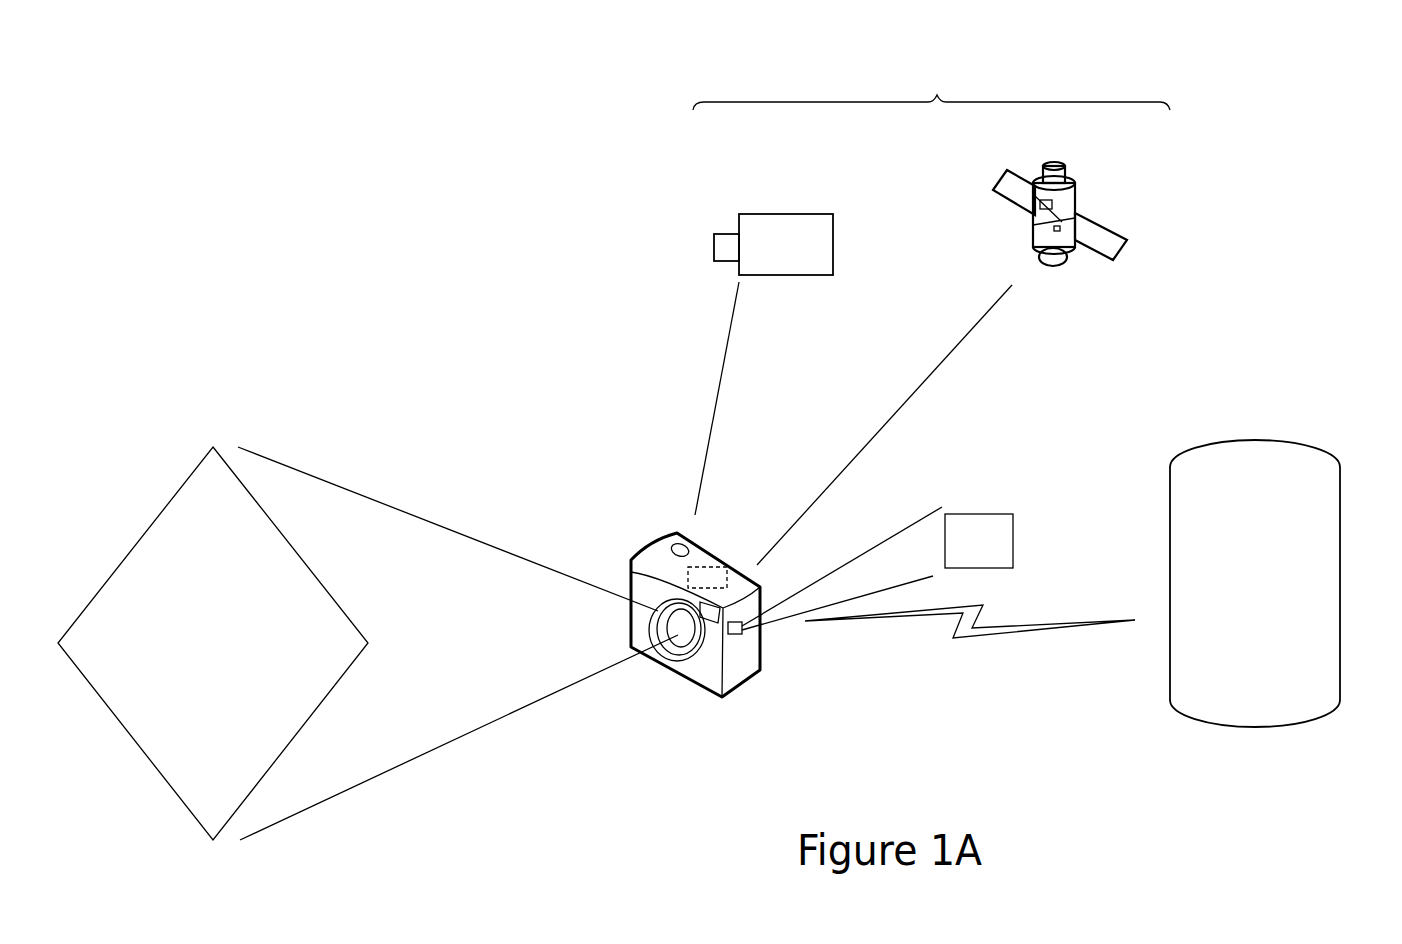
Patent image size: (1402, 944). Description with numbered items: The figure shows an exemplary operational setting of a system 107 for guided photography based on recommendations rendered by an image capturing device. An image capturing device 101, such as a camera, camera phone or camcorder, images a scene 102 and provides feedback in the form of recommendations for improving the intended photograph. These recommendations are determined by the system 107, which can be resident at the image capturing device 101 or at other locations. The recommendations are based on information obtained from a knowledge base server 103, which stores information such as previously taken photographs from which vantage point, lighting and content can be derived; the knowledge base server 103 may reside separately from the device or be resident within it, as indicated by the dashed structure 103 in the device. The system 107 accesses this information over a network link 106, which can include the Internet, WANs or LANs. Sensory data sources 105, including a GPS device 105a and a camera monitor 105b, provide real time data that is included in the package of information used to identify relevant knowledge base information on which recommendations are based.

The image capturing device 101 is at (738, 670).
The imaged scene 102 is at (290, 747).
The knowledge base server 103 is at (1273, 491).
The sensory data sources 105 is at (931, 70).
The global positioning satellite (GPS) device 105a is at (1108, 222).
The camera monitor 105b is at (780, 212).
The network link 106 is at (966, 640).
The system for guided photography 107 is at (877, 568).